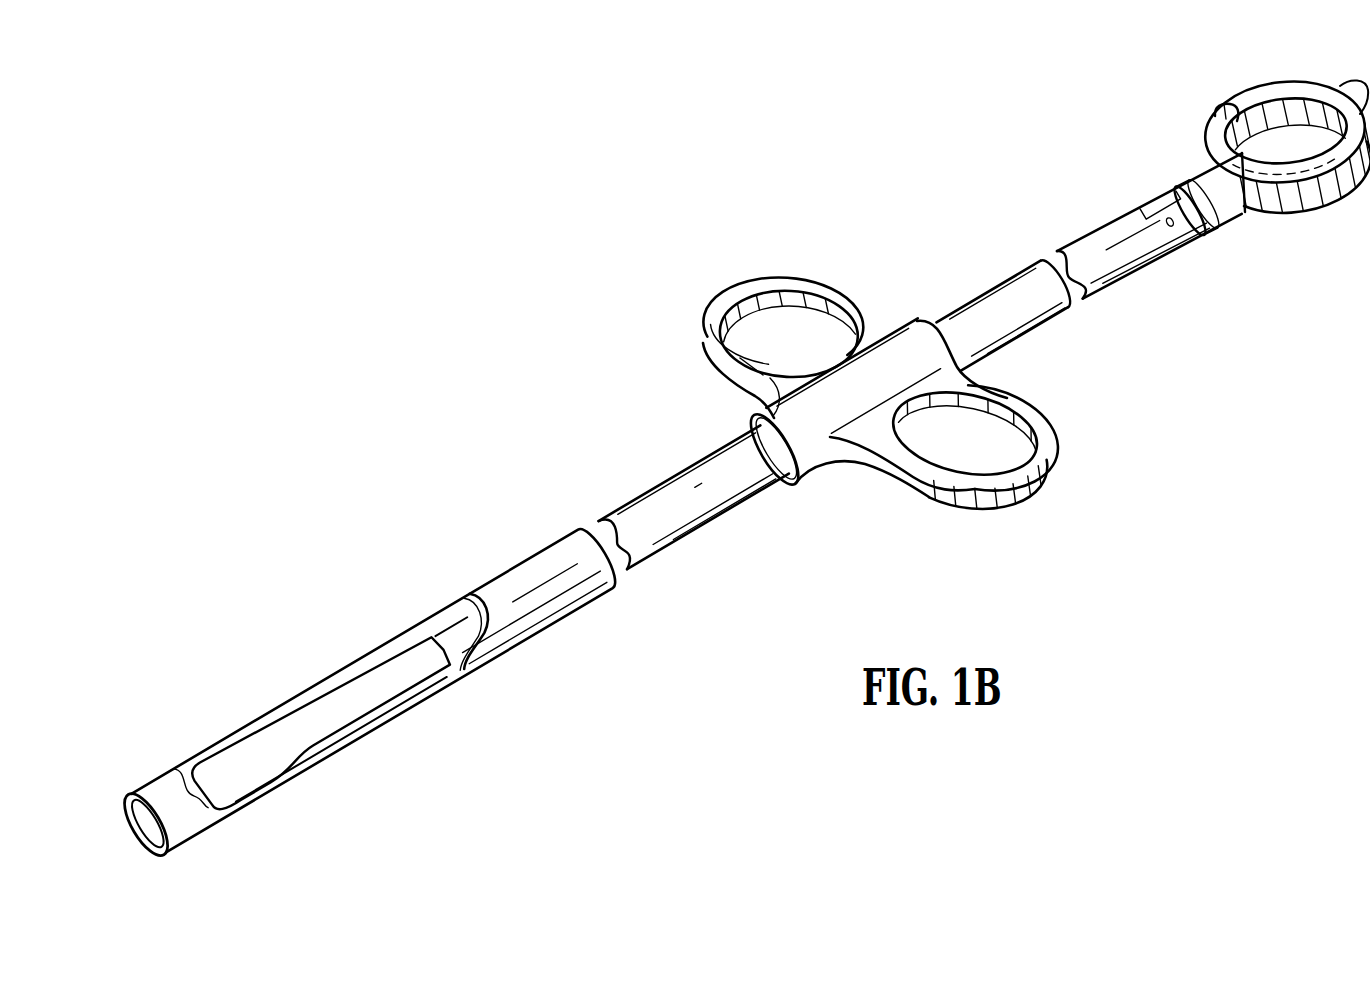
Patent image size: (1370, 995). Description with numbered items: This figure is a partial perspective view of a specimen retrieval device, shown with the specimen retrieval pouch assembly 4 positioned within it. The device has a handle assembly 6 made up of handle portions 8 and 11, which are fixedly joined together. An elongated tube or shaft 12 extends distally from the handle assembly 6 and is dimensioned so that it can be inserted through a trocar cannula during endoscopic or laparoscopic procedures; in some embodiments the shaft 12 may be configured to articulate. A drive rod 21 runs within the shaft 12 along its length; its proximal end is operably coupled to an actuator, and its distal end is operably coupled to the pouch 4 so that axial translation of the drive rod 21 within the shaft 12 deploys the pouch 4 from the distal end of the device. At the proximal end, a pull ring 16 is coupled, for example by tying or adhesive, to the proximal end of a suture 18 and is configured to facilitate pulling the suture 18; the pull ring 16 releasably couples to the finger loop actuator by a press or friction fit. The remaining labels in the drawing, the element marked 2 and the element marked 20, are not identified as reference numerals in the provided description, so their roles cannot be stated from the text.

The surgical instrument 2 is at (505, 269).
The specimen retrieval pouch assembly 4 is at (232, 790).
The handle assembly 6 is at (864, 254).
The handle portion 8 is at (734, 290).
The handle portion 11 is at (1040, 415).
The elongated tube or shaft 12 is at (651, 490).
The pull ring 16 is at (1266, 92).
The suture 18 is at (1213, 110).
The outer tube 20 is at (366, 642).
The drive rod 21 is at (449, 620).